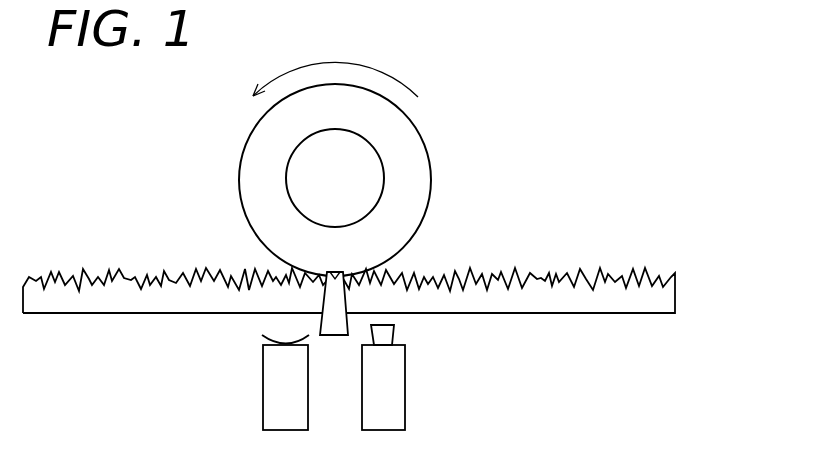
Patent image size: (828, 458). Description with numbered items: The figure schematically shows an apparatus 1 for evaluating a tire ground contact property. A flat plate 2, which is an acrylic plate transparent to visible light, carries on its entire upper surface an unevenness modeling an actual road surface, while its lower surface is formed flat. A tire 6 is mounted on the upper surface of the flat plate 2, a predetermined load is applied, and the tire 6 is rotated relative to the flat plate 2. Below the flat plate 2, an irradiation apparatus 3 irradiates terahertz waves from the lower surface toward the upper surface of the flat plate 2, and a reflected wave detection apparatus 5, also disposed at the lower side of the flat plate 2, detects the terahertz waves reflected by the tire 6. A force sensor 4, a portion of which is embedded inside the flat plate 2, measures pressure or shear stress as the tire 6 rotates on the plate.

The apparatus for evaluating a tire ground contact property 1 is at (116, 181).
The flat plate 2 is at (651, 296).
The irradiation apparatus 3 is at (387, 388).
The force sensor 4 is at (335, 325).
The reflected wave detection apparatus 5 is at (279, 389).
The tire 6 is at (408, 178).